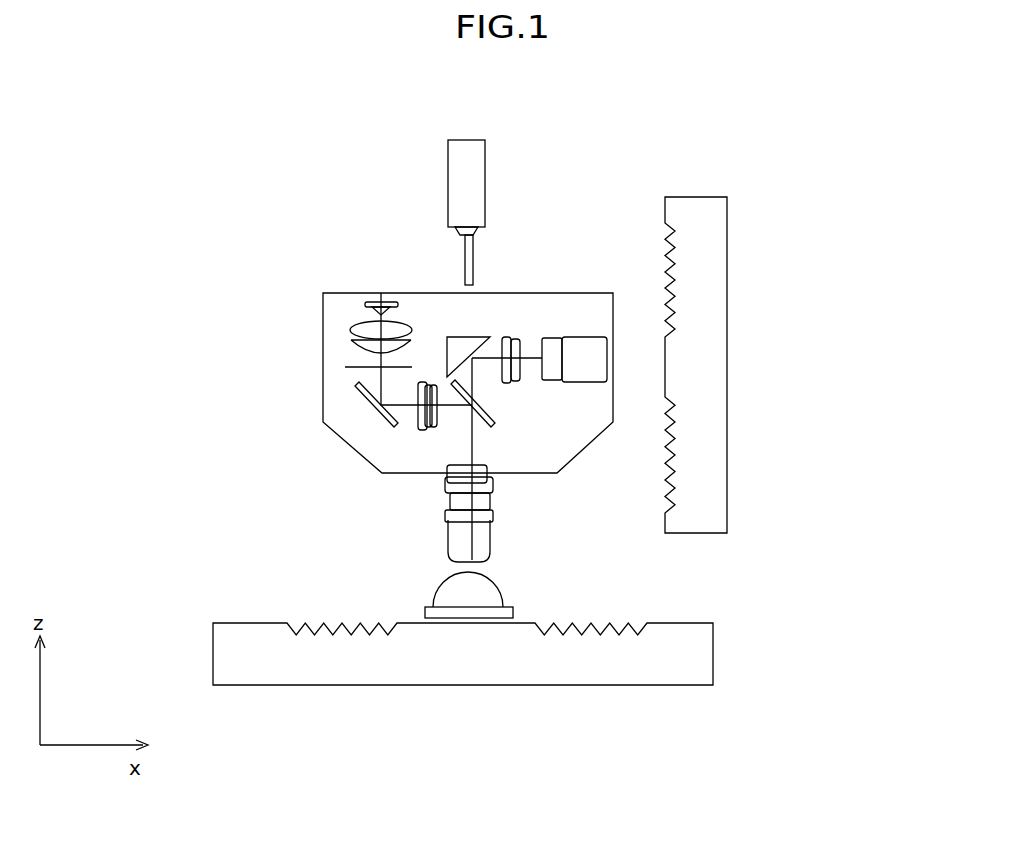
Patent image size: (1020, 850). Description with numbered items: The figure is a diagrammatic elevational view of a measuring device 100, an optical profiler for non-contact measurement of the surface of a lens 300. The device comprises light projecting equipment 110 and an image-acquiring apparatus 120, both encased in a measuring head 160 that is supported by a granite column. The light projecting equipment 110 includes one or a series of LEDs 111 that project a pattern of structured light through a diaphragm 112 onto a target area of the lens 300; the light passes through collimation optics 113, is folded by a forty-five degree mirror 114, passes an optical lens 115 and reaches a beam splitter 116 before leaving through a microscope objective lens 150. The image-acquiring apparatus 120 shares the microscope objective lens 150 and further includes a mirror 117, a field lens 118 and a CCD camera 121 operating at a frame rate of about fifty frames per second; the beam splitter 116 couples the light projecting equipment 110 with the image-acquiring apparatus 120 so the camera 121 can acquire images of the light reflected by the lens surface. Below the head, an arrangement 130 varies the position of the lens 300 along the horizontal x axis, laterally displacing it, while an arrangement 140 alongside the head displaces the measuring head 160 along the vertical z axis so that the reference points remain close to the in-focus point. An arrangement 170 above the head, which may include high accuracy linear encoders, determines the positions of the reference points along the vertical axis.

The measuring device 100 is at (218, 467).
The light projecting equipment 110 is at (330, 292).
The LEDs 111 is at (370, 300).
The diaphragm 112 is at (345, 367).
The collimation optics 113 is at (350, 330).
The 45° mirror 114 is at (355, 386).
The optical lens 115 is at (425, 430).
The beam splitter 116 is at (495, 427).
The mirror 117 is at (473, 336).
The field lens 118 is at (516, 337).
The image-acquiring apparatus 120 is at (556, 400).
The CCD camera 121 is at (583, 337).
The arrangement for varying the position of the lens 130 is at (460, 652).
The arrangement for displacing the measuring head 140 is at (703, 387).
The microscope objective lens 150 is at (475, 533).
The measuring head 160 is at (420, 280).
The arrangement for determining positions in the vertical axis 170 is at (468, 188).
The lens 300 is at (437, 587).